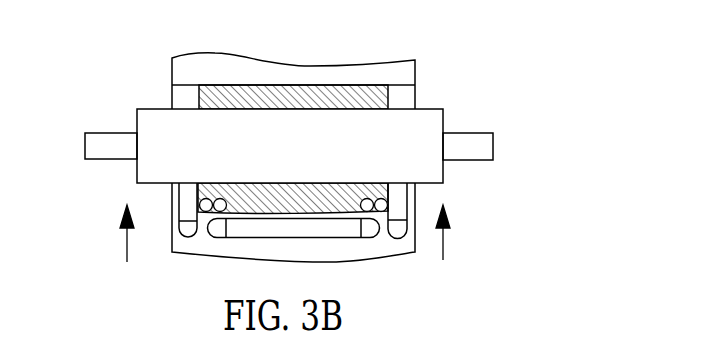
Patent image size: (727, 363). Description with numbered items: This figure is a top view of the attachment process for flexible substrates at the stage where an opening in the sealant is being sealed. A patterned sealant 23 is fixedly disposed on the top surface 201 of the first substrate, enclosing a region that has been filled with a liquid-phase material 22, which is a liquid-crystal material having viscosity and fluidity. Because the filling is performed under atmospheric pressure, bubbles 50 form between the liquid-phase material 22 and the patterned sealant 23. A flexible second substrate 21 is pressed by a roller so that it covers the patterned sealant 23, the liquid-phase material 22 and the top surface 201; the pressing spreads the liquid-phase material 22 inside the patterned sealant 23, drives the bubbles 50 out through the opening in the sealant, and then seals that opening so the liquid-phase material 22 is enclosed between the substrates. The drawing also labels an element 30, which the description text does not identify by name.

The second substrate 21 is at (413, 77).
The liquid-phase material 22 is at (217, 97).
The patterned sealant 23 is at (198, 70).
The shaft 30 is at (425, 127).
The bubbles 50 is at (209, 211).
The top surface 201 is at (337, 260).